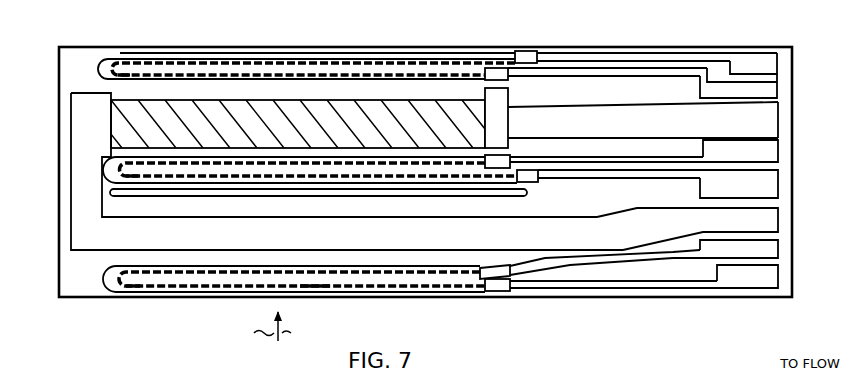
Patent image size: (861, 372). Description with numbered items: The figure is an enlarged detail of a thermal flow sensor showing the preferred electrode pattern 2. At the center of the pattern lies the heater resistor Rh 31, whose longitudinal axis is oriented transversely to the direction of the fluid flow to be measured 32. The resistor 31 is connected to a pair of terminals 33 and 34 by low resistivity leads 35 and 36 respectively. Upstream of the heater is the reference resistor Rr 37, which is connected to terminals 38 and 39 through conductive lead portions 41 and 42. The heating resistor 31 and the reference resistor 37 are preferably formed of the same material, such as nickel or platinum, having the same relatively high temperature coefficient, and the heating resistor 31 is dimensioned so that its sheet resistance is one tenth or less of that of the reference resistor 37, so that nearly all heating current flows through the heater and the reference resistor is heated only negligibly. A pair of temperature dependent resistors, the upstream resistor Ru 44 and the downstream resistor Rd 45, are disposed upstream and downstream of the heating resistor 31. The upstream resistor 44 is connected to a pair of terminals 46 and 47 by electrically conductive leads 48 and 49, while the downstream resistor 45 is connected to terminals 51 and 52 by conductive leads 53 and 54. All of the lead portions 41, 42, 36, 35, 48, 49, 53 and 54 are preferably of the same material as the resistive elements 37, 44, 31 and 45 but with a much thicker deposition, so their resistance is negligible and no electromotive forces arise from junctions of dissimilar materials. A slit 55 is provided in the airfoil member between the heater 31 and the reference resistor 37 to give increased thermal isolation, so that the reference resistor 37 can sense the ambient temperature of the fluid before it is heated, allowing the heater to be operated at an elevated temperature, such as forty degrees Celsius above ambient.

The electrode pattern 2 is at (464, 41).
The heater resistor 31 is at (317, 134).
The direction of fluid flow 32 is at (257, 327).
The terminal 33 is at (756, 120).
The terminal 34 is at (687, 229).
The low resistivity lead 35 is at (643, 120).
The low resistivity lead 36 is at (275, 237).
The reference resistor 37 is at (190, 283).
The terminal 38 is at (725, 251).
The terminal 39 is at (747, 276).
The conductive lead portion 41 is at (547, 258).
The conductive lead portion 42 is at (668, 278).
The upstream temperature dependent resistor 44 is at (133, 175).
The downstream temperature dependent resistor 45 is at (124, 74).
The terminal 46 is at (740, 152).
The terminal 47 is at (739, 184).
The electrically conductive lead 48 is at (592, 157).
The electrically conductive lead 49 is at (618, 170).
The terminal 51 is at (753, 65).
The terminal 52 is at (760, 90).
The conductive lead 53 is at (540, 62).
The conductive lead 54 is at (575, 70).
The slit 55 is at (185, 194).
The heater resistor Rh is at (222, 66).
The downstream resistor Rd is at (190, 96).
The upstream resistor Ru is at (300, 174).
The reference resistor Rr is at (335, 282).